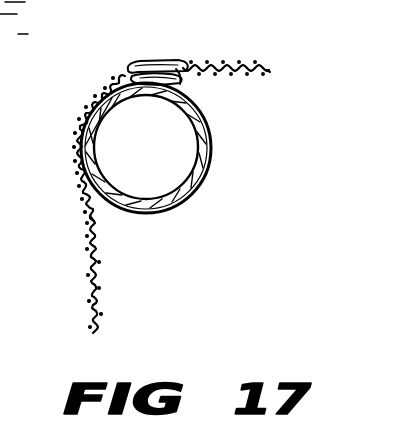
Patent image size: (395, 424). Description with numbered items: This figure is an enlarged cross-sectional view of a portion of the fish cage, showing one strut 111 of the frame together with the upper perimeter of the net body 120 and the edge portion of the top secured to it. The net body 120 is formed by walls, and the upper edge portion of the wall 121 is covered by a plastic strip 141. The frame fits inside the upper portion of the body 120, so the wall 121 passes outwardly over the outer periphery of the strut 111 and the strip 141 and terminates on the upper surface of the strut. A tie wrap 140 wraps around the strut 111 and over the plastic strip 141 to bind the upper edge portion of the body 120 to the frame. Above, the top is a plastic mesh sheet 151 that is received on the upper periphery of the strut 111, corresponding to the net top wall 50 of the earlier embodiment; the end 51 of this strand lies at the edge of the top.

The top wall 50 is at (238, 58).
The strand end 51 is at (270, 72).
The strut 111 is at (192, 183).
The body 120 is at (94, 276).
The wall 121 is at (96, 228).
The tie wrap 140 is at (210, 117).
The plastic strip 141 is at (150, 68).
The plastic mesh sheet 151 is at (172, 62).